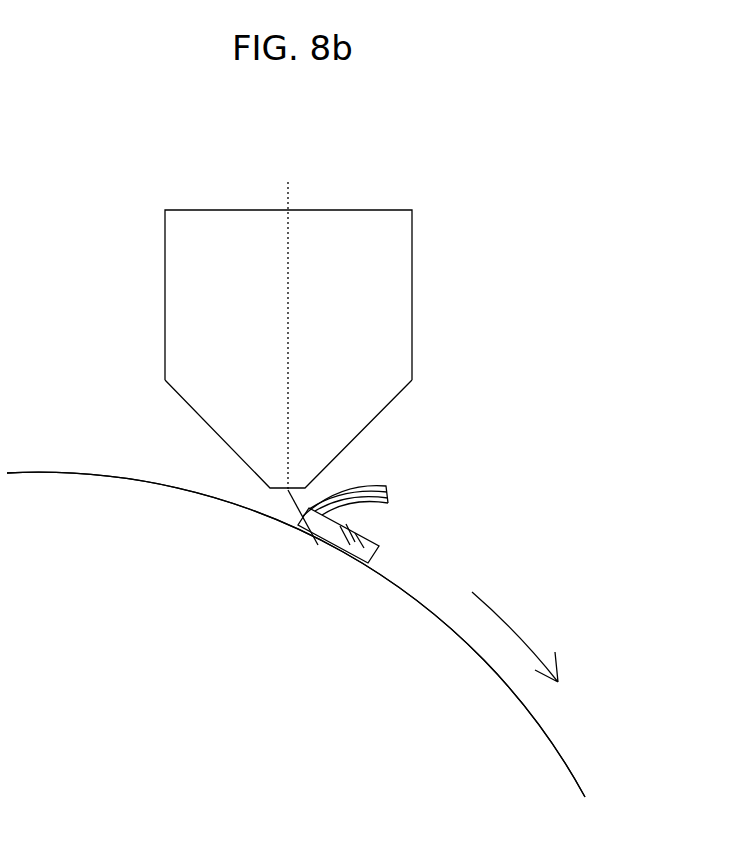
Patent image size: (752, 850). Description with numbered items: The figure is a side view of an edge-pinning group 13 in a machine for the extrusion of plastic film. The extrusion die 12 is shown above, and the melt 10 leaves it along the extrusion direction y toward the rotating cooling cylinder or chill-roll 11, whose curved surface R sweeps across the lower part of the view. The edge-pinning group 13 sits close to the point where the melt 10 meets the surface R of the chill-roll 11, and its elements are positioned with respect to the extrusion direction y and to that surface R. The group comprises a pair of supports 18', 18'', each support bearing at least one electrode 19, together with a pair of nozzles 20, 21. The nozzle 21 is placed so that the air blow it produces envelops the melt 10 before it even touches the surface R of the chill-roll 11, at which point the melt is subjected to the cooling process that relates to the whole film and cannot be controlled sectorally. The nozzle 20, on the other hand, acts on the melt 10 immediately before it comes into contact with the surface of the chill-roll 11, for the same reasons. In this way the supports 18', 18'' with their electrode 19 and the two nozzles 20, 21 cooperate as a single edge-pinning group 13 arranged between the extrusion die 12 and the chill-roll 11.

The melt 10 is at (297, 522).
The chill-roll 11 is at (234, 509).
The extrusion die 12 is at (330, 288).
The edge-pinning group 13 is at (385, 530).
The support 18' is at (330, 547).
The support 18'' is at (359, 581).
The electrode 19 is at (348, 552).
The nozzle 20 is at (386, 494).
The nozzle 21 is at (372, 482).
The surface of the cooling cylinder R is at (423, 607).
The extrusion direction y is at (515, 637).